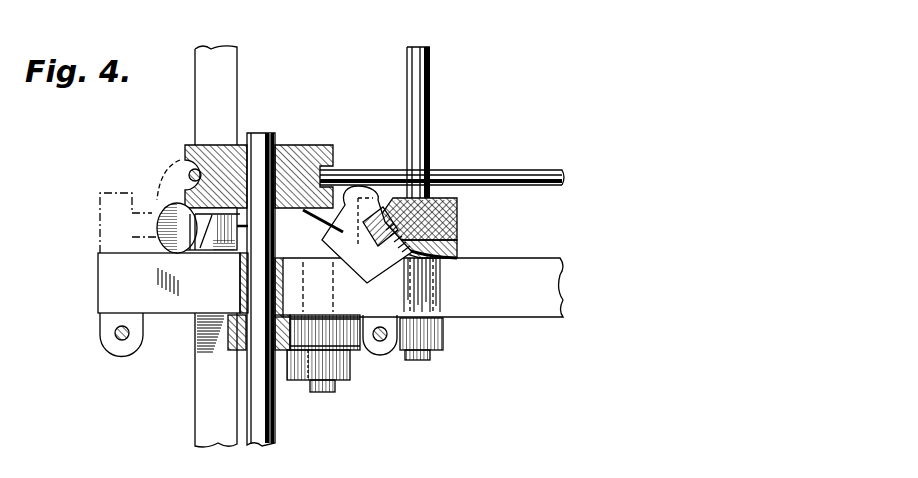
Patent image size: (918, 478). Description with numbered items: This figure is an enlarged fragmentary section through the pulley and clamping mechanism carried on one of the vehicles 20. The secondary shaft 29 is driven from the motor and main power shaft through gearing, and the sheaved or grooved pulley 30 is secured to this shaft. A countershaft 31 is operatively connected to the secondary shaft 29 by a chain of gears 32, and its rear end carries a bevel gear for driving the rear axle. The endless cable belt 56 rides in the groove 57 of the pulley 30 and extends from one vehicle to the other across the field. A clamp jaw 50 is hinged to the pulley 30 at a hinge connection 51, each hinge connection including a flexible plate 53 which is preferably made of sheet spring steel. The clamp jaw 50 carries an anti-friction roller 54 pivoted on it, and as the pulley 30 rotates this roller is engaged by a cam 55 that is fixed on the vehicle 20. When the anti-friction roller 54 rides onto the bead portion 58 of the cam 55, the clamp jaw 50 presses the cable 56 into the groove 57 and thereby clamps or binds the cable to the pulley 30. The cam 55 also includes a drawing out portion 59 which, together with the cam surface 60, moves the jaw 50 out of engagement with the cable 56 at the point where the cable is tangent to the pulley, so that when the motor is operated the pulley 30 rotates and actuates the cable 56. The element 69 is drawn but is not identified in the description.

The vehicle 20 is at (197, 401).
The secondary shaft 29 is at (276, 437).
The sheaved or grooved pulley 30 is at (300, 147).
The countershaft 31 is at (431, 89).
The chain of gears 32 is at (357, 362).
The clamp jaw 50 is at (357, 197).
The hinge connection 51 is at (240, 226).
The flexible plate 53 is at (317, 222).
The anti-friction roller 54 is at (400, 287).
The cam 55 is at (458, 228).
The endless cable belt 56 is at (506, 170).
The groove 57 is at (190, 170).
The bead portion 58 is at (124, 256).
The drawing out portion 59 is at (458, 246).
The cam surface 60 is at (345, 283).
The bar edge 69 is at (512, 184).